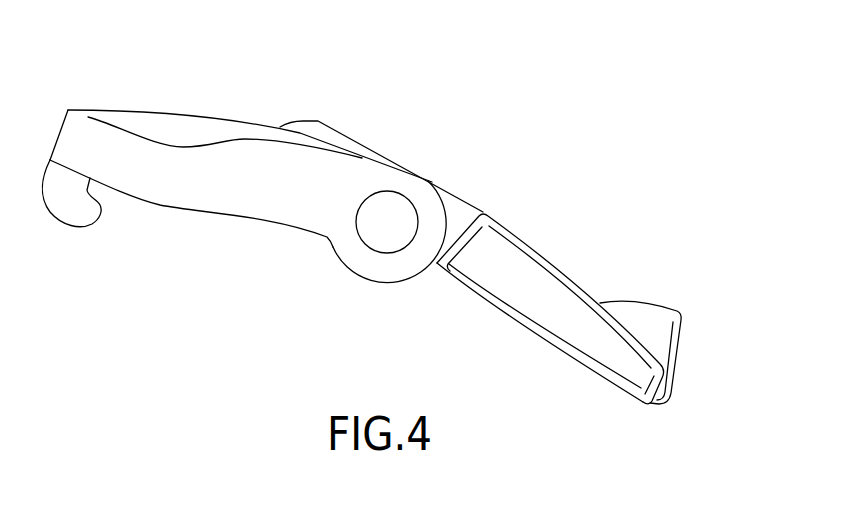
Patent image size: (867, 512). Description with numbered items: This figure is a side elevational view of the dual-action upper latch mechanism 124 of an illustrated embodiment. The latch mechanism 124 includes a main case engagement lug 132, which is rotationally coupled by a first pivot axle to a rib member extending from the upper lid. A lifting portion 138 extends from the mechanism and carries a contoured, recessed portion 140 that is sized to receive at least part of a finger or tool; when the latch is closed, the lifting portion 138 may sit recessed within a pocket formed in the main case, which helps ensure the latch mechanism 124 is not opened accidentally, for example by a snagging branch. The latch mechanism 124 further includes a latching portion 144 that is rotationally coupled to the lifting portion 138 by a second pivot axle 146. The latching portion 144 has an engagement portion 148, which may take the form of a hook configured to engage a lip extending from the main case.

The upper latch mechanism 124 is at (581, 104).
The main case engagement lug 132 is at (312, 132).
The lifting portion 138 is at (535, 242).
The recessed portion 140 is at (682, 348).
The latching portion 144 is at (165, 110).
The second pivot axle 146 is at (410, 197).
The engagement portion 148 is at (58, 215).